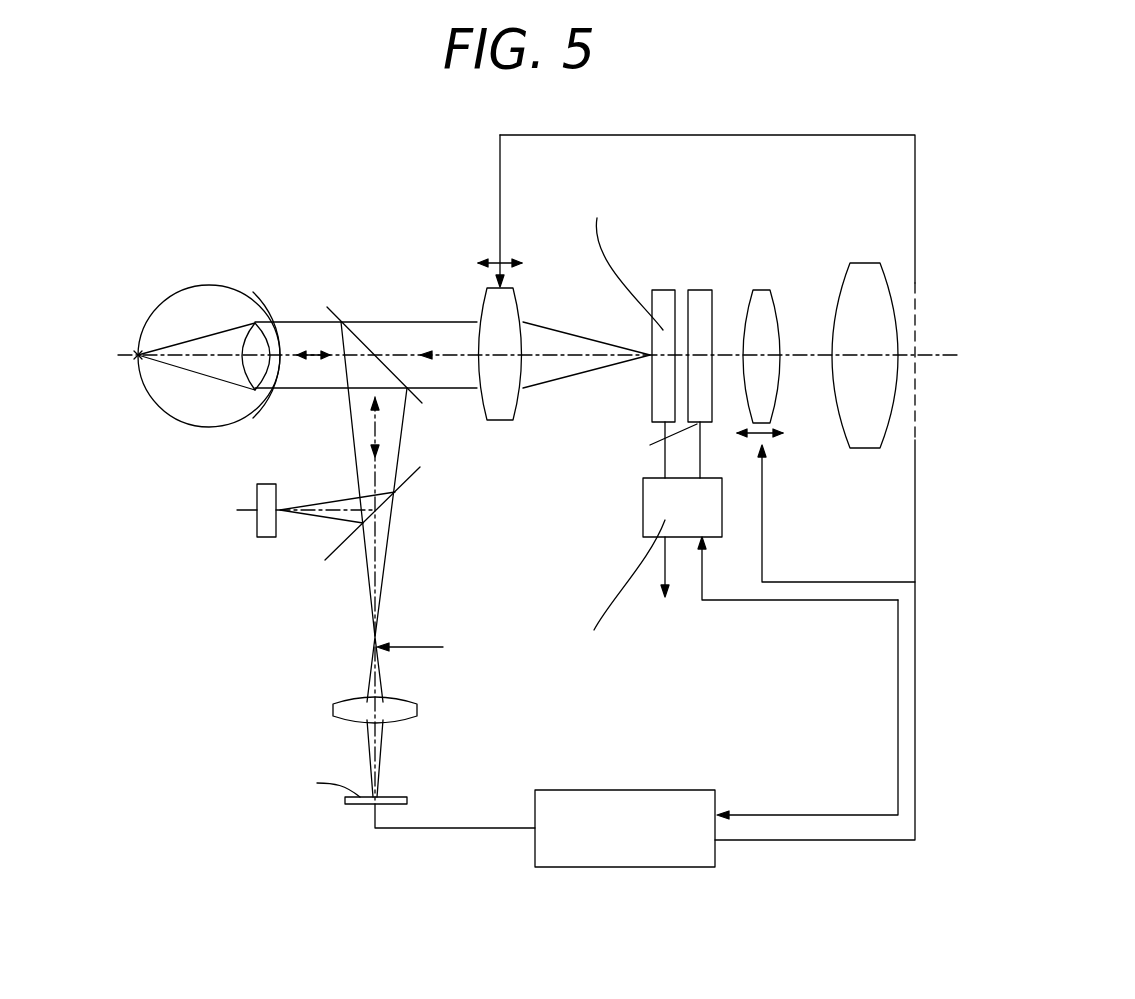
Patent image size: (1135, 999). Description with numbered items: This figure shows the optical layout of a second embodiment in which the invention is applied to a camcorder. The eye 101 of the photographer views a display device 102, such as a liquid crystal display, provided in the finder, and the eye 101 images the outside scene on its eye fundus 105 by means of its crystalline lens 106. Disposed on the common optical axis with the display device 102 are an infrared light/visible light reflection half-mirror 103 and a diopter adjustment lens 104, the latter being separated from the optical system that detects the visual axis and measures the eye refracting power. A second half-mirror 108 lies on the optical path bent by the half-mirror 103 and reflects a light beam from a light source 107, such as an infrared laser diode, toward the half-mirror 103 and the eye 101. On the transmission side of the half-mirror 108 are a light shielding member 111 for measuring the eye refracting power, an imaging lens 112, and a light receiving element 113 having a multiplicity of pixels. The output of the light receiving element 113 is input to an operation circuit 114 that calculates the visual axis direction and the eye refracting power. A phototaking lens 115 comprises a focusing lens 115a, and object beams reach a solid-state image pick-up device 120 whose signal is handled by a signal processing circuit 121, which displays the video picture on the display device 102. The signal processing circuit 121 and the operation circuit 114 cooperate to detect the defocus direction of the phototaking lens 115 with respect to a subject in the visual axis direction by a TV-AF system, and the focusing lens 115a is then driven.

The eye 101 is at (197, 312).
The display device 102 is at (663, 300).
The infrared light/visible light reflection half-mirror 103 is at (335, 308).
The diopter adjustment lens 104 is at (520, 305).
The eye fundus 105 is at (138, 363).
The crystalline lens 106 is at (247, 397).
The light source 107 is at (260, 537).
The half-mirror 108 is at (417, 478).
The light shielding member 111 is at (410, 647).
The imaging lens 112 is at (415, 706).
The light receiving element 113 is at (397, 797).
The operation circuit 114 is at (628, 790).
The phototaking lens 115 is at (897, 248).
The focusing lens 115a is at (778, 393).
The solid-state image pick-up device 120 is at (705, 300).
The signal processing circuit 121 is at (655, 503).